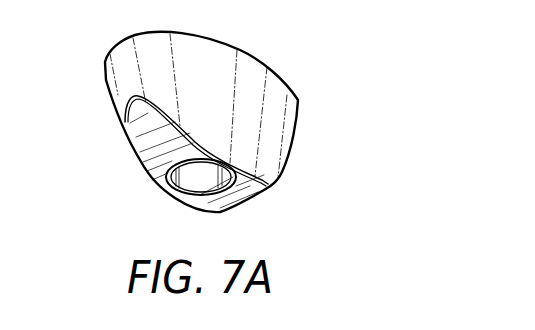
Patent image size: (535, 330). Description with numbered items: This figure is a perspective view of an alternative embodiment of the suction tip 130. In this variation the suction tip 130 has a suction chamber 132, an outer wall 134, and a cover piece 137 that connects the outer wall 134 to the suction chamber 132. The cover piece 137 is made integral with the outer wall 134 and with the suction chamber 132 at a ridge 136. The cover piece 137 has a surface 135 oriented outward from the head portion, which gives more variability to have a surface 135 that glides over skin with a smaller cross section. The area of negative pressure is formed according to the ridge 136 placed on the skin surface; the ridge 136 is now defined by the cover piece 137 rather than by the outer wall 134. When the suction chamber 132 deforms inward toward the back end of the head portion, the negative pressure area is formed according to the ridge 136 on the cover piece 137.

The suction tip 130 is at (272, 43).
The suction chamber 132 is at (213, 177).
The outer wall 134 is at (285, 117).
The surface 135 is at (143, 133).
The ridge 136 is at (168, 192).
The cover piece 137 is at (124, 96).